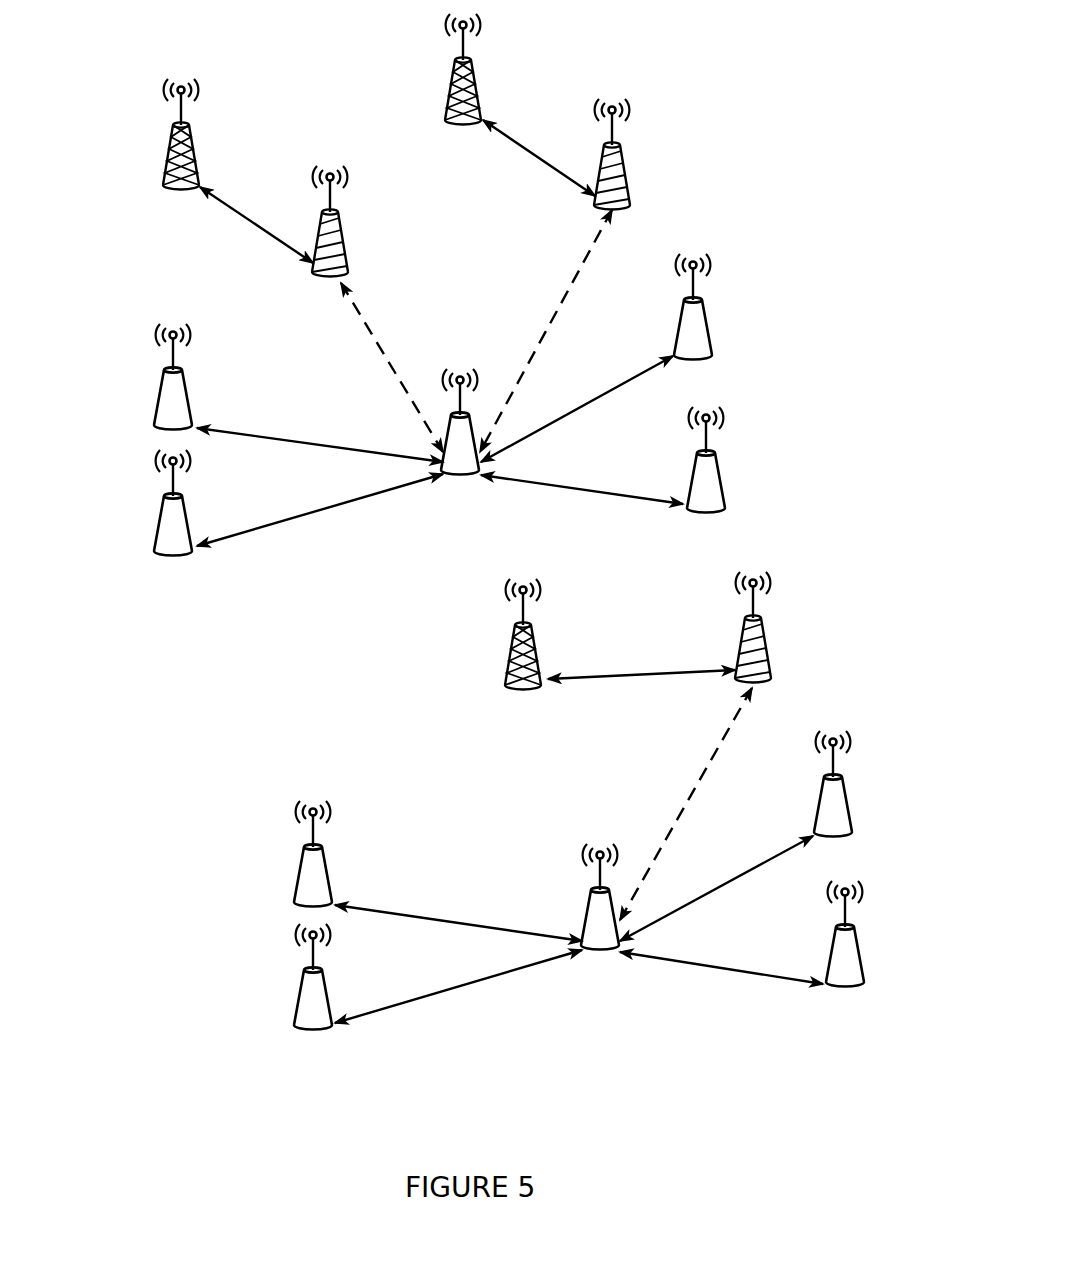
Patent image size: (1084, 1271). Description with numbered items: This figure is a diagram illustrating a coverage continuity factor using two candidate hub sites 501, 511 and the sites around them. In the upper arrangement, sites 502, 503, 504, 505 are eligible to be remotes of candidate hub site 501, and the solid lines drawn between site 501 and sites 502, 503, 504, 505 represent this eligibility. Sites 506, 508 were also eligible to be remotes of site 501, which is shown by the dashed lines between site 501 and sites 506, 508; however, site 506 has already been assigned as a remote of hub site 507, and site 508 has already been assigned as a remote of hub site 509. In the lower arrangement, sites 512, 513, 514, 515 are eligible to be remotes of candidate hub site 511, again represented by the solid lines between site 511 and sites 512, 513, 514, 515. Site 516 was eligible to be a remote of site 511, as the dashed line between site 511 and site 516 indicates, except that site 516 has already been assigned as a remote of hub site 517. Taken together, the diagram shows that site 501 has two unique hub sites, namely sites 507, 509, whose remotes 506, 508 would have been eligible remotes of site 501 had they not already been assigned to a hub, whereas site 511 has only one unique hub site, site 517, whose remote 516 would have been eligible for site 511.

The candidate hub site 501 is at (441, 430).
The site 502 is at (160, 391).
The site 503 is at (160, 517).
The site 504 is at (707, 330).
The site 505 is at (720, 483).
The site 506 is at (626, 178).
The hub site 507 is at (476, 93).
The site 508 is at (344, 245).
The hub site 509 is at (196, 158).
The candidate hub site 511 is at (590, 903).
The site 512 is at (300, 870).
The site 513 is at (300, 993).
The site 514 is at (847, 807).
The site 515 is at (860, 957).
The site 516 is at (767, 651).
The hub site 517 is at (537, 658).